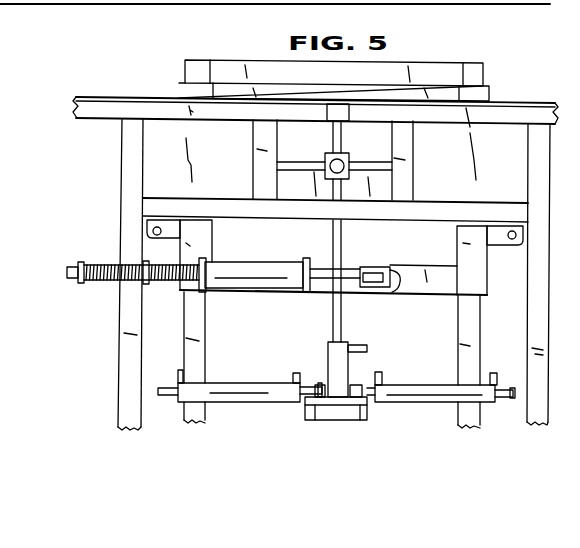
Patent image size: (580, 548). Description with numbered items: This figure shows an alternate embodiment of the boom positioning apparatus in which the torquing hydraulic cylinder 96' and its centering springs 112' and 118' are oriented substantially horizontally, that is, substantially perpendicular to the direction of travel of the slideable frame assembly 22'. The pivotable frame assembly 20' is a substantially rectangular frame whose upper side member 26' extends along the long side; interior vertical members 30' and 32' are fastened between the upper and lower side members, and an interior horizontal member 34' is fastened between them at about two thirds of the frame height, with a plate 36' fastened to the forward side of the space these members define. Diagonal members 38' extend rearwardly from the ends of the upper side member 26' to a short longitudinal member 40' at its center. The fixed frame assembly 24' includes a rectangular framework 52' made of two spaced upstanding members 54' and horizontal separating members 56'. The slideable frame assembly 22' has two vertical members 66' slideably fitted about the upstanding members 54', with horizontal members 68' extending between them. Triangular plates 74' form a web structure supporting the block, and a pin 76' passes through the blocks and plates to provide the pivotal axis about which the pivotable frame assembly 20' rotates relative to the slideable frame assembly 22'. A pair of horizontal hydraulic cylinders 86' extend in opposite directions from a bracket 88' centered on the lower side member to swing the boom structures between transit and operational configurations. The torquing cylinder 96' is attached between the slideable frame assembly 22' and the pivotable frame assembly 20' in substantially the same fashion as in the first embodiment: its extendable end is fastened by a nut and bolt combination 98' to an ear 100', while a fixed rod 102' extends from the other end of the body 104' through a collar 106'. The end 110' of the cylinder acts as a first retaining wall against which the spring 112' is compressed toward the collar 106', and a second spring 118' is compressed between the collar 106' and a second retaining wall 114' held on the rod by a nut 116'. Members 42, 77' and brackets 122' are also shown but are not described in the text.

The pivotable frame assembly 20' is at (279, 229).
The slideable frame assembly 22' is at (333, 303).
The fixed frame assembly 24' is at (322, 63).
The upper side member 26' is at (315, 94).
The interior vertical member 30' is at (106, 274).
The interior vertical member 32' is at (518, 274).
The interior horizontal member 34' is at (298, 209).
The plate 36' is at (272, 160).
The diagonal member 38' is at (315, 110).
The longitudinal member 40' is at (345, 92).
The member 42 is at (13, 355).
The rectangular framework 52' is at (227, 357).
The upstanding member 54' is at (332, 360).
The horizontal separating member 56' is at (334, 61).
The vertical member 66' is at (333, 257).
The horizontal member 68' is at (334, 83).
The triangular plate 74' is at (334, 150).
The pin 76' is at (357, 154).
The center block 77' is at (327, 308).
The hydraulic cylinder 86' is at (336, 378).
The bracket 88' is at (366, 409).
The torquing hydraulic cylinder 96' is at (254, 275).
The nut and bolt combination 98' is at (381, 279).
The ear 100' is at (385, 298).
The fixed rod 102' is at (39, 288).
The body 104' is at (316, 298).
The collar 106' is at (99, 279).
The end 110' is at (222, 289).
The spring 112' is at (161, 294).
The second retaining wall 114' is at (49, 256).
The nut 116' is at (39, 290).
The second spring 118' is at (96, 296).
The brackets 122' is at (297, 251).